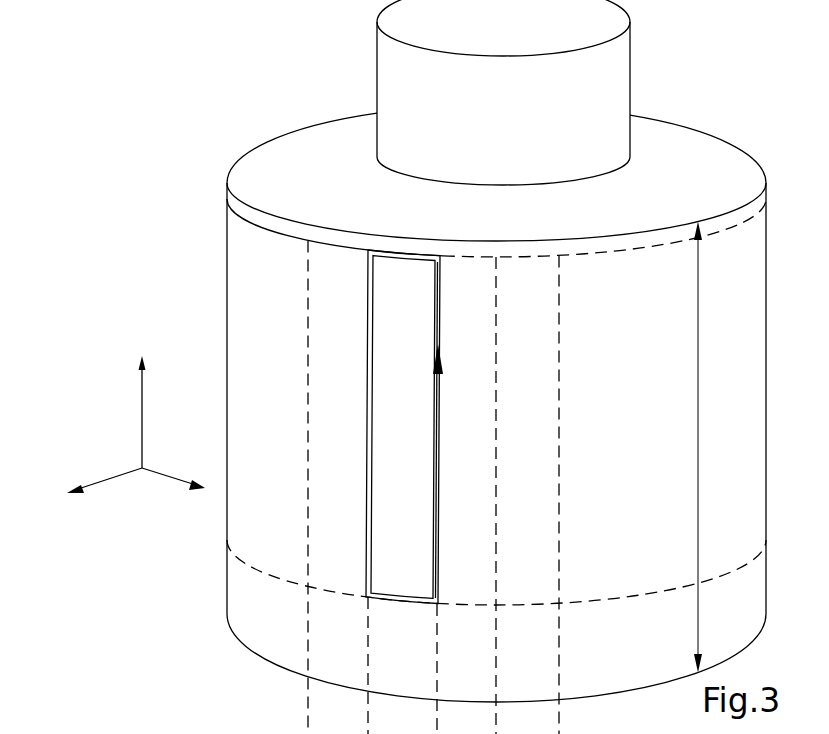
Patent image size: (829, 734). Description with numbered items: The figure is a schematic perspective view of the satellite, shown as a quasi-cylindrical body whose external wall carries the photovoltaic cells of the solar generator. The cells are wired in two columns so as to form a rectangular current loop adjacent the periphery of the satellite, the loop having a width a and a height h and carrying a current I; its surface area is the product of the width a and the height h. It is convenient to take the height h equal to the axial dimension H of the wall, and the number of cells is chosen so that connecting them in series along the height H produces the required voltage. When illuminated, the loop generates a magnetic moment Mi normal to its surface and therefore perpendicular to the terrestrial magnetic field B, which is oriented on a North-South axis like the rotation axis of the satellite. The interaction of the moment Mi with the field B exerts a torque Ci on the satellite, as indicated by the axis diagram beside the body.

The width of current loop a is at (403, 427).
The current I is at (450, 353).
The height of current loop h is at (449, 430).
The axial dimension of the wall H is at (707, 447).
The terrestrial magnetic field B is at (165, 316).
The magnetic moment of loop Mi is at (113, 439).
The torque on satellite Ci is at (183, 487).